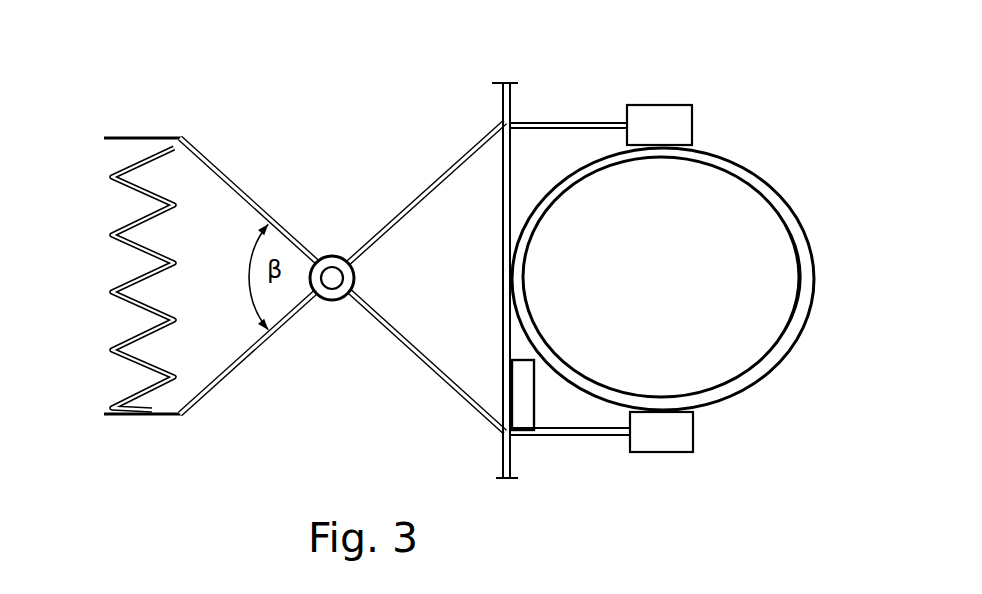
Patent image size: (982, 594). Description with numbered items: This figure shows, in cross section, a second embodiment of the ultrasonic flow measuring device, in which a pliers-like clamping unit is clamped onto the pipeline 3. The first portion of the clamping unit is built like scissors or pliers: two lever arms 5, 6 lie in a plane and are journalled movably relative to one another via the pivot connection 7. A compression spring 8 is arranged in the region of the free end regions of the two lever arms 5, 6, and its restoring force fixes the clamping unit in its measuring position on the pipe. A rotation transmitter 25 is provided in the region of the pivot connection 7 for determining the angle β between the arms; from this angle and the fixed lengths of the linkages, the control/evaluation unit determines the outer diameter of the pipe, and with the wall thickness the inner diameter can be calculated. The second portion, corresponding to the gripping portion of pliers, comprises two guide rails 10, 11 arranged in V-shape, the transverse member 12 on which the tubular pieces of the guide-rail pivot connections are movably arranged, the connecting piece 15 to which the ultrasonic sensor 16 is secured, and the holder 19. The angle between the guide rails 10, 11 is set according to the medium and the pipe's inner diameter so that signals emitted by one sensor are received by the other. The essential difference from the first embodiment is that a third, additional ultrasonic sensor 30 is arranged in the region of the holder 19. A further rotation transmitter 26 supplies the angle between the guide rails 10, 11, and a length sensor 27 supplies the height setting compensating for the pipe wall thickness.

The pipeline 3 is at (773, 187).
The lever arm 5 is at (216, 388).
The lever arm 6 is at (222, 177).
The pivot connection 7 is at (335, 300).
The compression spring 8 is at (112, 347).
The guide rail 10 is at (503, 262).
The guide rail 11 is at (503, 262).
The transverse member 12 is at (510, 155).
The connecting piece 15 is at (568, 123).
The ultrasonic sensor 16 is at (692, 127).
The holder 19 is at (600, 437).
The rotation transmitter 25 is at (333, 272).
The rotation transmitter 26 is at (524, 405).
The length sensor 27 is at (524, 405).
The ultrasonic sensor 30 is at (668, 437).